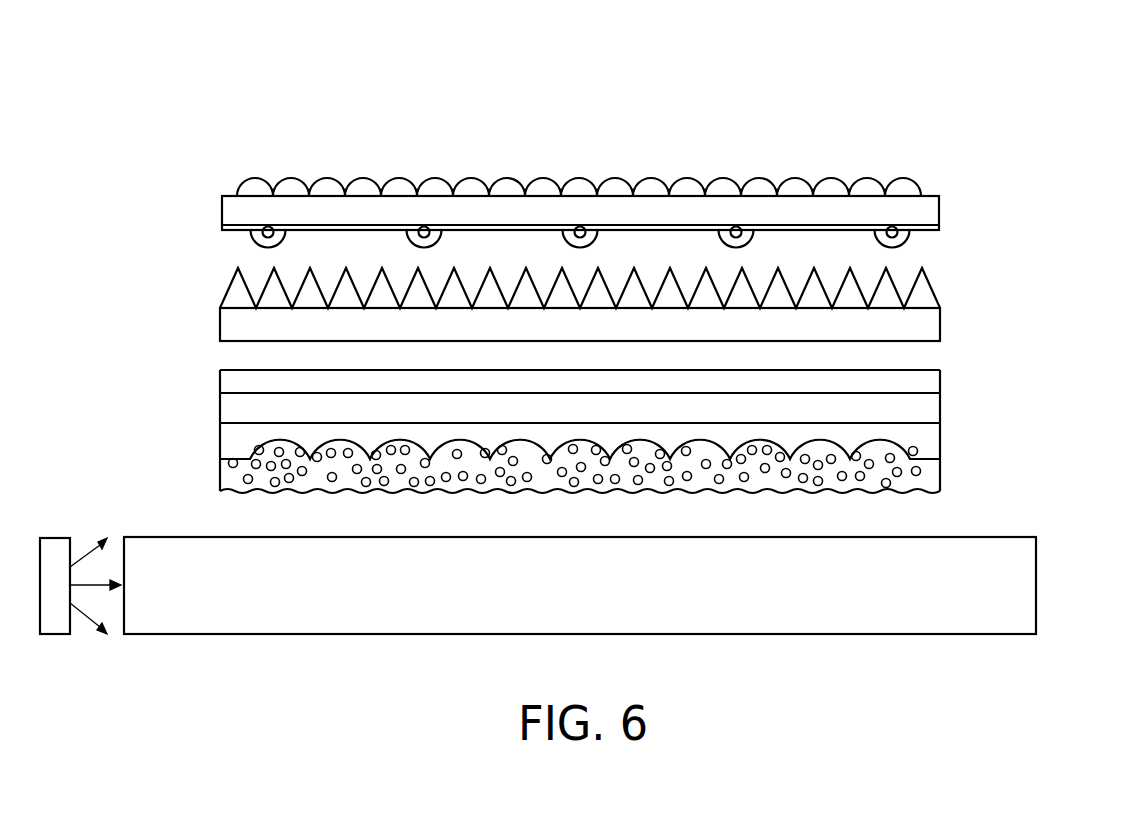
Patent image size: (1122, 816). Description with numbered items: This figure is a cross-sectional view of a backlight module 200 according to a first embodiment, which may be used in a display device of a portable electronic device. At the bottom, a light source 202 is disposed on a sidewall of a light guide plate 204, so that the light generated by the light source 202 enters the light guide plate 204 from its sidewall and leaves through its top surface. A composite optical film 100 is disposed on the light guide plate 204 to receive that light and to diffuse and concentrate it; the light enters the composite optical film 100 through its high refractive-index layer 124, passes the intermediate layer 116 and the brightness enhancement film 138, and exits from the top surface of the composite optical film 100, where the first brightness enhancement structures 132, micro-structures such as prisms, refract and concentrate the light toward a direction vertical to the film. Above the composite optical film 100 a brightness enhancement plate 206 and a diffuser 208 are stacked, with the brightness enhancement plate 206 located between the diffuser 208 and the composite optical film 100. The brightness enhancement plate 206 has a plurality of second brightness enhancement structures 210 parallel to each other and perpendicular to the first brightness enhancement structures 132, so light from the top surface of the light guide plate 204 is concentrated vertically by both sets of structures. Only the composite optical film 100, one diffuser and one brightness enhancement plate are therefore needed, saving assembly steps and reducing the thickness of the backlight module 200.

The backlight module 200 is at (1007, 107).
The light source 202 is at (53, 536).
The light guide plate 204 is at (1036, 582).
The brightness enhancement plate 206 is at (630, 294).
The diffuser 208 is at (939, 209).
The second brightness enhancement structures 210 is at (935, 279).
The composite optical film 100 is at (662, 426).
The first brightness enhancement structures 132 is at (943, 376).
The brightness enhancement film 138 is at (940, 409).
The intermediate layer 116 is at (940, 445).
The high refractive-index layer 124 is at (940, 479).